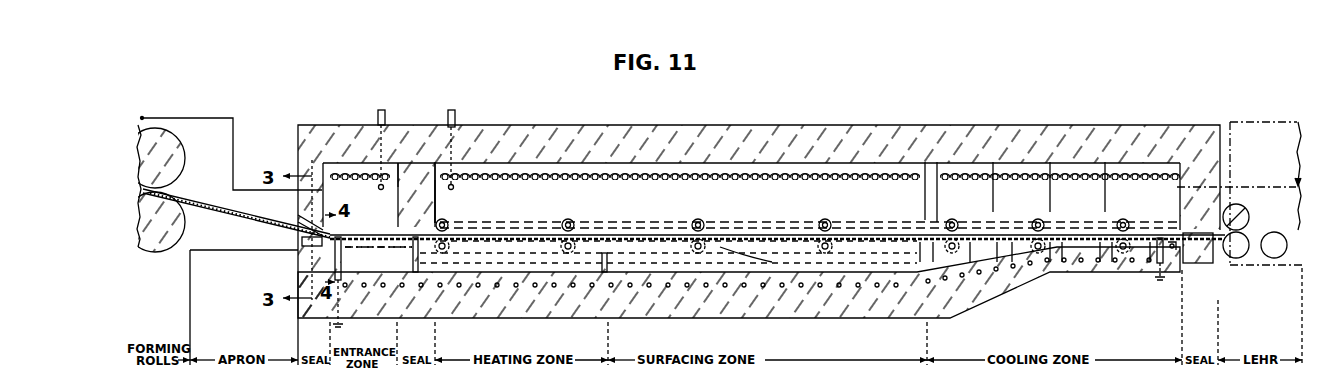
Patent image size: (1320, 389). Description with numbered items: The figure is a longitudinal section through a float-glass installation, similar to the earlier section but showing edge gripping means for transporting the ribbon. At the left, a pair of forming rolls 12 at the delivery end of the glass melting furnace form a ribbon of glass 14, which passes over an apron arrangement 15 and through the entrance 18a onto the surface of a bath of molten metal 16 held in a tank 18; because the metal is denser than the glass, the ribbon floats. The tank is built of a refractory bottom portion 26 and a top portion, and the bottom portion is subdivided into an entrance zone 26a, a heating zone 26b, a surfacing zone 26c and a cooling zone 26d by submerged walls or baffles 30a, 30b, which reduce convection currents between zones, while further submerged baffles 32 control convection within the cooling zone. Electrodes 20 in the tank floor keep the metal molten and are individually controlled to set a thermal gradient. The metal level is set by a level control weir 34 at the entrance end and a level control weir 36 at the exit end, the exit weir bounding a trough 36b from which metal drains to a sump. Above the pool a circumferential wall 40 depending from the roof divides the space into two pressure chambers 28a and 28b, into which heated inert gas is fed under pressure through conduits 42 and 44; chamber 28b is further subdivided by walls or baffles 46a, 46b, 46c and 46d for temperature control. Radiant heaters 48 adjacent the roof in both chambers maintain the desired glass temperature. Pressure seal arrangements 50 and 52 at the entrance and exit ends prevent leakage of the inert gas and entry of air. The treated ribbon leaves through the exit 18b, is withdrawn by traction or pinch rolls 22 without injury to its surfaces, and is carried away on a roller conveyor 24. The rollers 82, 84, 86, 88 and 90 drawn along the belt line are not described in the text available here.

The forming rolls 12 is at (197, 175).
The ribbon of glass 14 is at (192, 205).
The apron arrangement 15 is at (217, 244).
The bath of molten metal 16 is at (577, 264).
The tank 18 is at (300, 141).
The entrance 18a is at (297, 216).
The exit 18b is at (1240, 212).
The electrodes 20 is at (547, 287).
The traction or pinch rolls 22 is at (1262, 222).
The roller conveyor 24 is at (1274, 258).
The refractory bottom portion 26 is at (777, 283).
The entrance zone 26a is at (375, 262).
The heating zone 26b is at (592, 335).
The surfacing zone 26c is at (742, 264).
The cooling zone 26d is at (993, 247).
The gas chamber 28a is at (375, 191).
The gas chamber 28b is at (680, 192).
The submerged wall or baffle 30a is at (433, 253).
The submerged wall or baffle 30b is at (620, 253).
The submerged baffles 32 is at (937, 255).
The level control weir 34 is at (341, 240).
The level control weir 36 is at (1160, 242).
The trough 36b is at (1170, 244).
The circumferential wall 40 is at (436, 202).
The conduit 42 is at (378, 110).
The conduit 44 is at (456, 115).
The wall or baffle 46a is at (926, 192).
The wall or baffle 46b is at (993, 196).
The wall or baffle 46c is at (1050, 196).
The wall or baffle 46d is at (1105, 196).
The radiant heaters 48 is at (345, 172).
The pressure seal arrangement 50 is at (297, 230).
The pressure seal arrangement 52 is at (1212, 264).
The belt rollers 82 is at (563, 220).
The return roller 84 is at (821, 244).
The belt rollers 86 is at (820, 220).
The return roller 88 is at (562, 250).
The belt rollers 90 is at (925, 209).